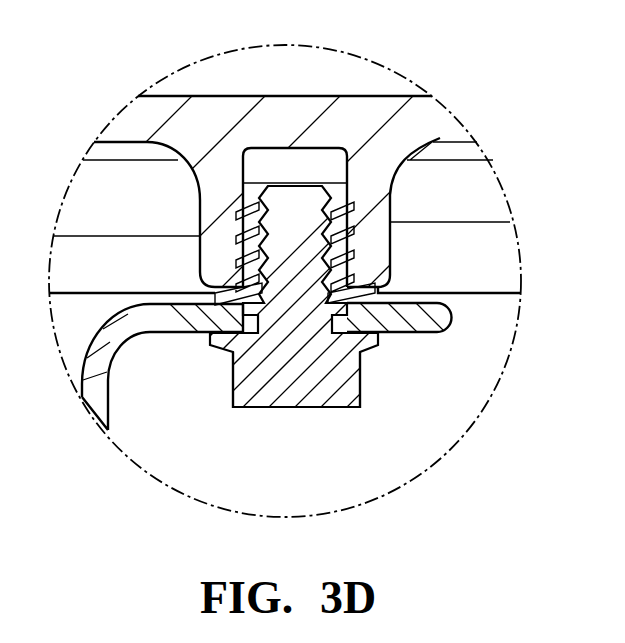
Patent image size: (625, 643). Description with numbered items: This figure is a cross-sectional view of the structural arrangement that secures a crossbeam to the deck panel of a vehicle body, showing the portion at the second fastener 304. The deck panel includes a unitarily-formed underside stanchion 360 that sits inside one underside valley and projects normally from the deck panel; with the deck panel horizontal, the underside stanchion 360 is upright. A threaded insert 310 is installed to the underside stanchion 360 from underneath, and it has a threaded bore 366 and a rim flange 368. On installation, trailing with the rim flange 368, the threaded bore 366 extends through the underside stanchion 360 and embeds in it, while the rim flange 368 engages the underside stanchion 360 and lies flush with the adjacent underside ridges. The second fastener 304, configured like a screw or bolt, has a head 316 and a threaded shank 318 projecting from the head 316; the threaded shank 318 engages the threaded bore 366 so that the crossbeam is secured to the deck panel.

The underside stanchion 360 is at (440, 138).
The threaded shank 318 is at (350, 236).
The threaded bore 366 is at (348, 258).
The threaded insert 310 is at (348, 283).
The rim flange 368 is at (378, 330).
The second fastener 304 is at (360, 348).
The head 316 is at (360, 388).